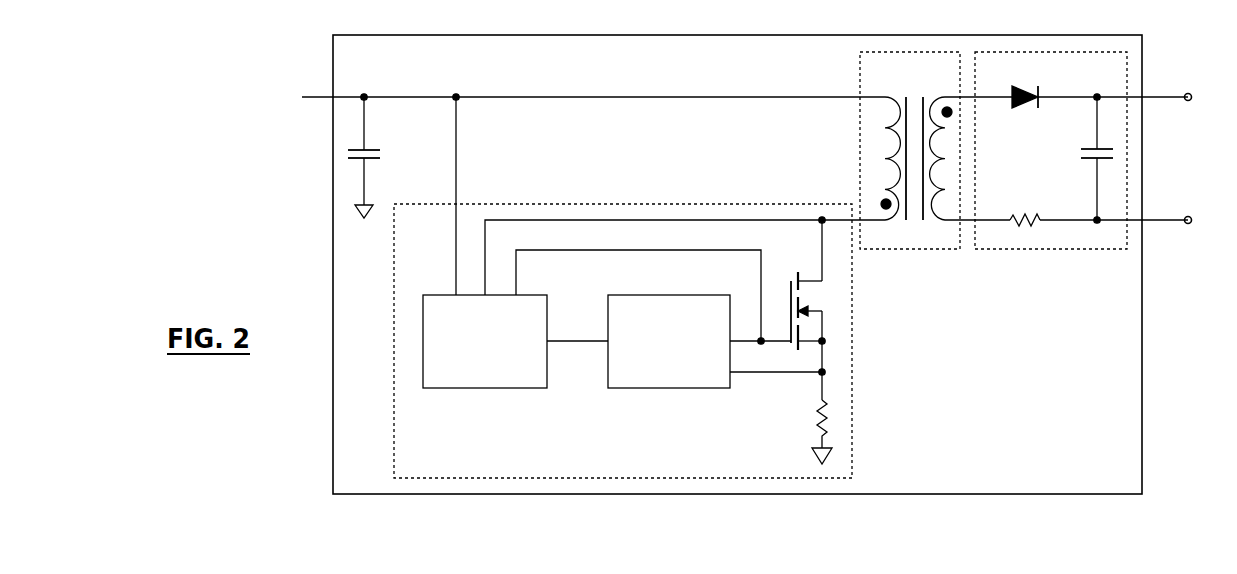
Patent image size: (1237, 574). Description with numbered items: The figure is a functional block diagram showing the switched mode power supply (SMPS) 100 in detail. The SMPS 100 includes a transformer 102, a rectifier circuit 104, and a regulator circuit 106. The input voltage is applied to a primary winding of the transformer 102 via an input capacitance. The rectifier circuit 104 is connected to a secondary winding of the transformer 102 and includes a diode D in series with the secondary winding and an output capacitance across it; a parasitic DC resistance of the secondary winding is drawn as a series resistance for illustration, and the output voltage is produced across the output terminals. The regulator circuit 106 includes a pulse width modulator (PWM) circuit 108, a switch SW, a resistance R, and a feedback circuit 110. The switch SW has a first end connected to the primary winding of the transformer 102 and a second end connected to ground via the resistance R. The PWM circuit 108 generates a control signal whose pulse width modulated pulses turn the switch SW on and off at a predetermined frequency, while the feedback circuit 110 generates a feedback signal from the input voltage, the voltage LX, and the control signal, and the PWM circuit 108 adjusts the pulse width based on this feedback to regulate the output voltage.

The switched mode power supply (SMPS) 100 is at (742, 35).
The transformer 102 is at (910, 249).
The rectifier circuit 104 is at (1055, 249).
The regulator circuit 106 is at (853, 457).
The pulse width modulator (PWM) circuit 108 is at (672, 295).
The feedback circuit 110 is at (548, 308).